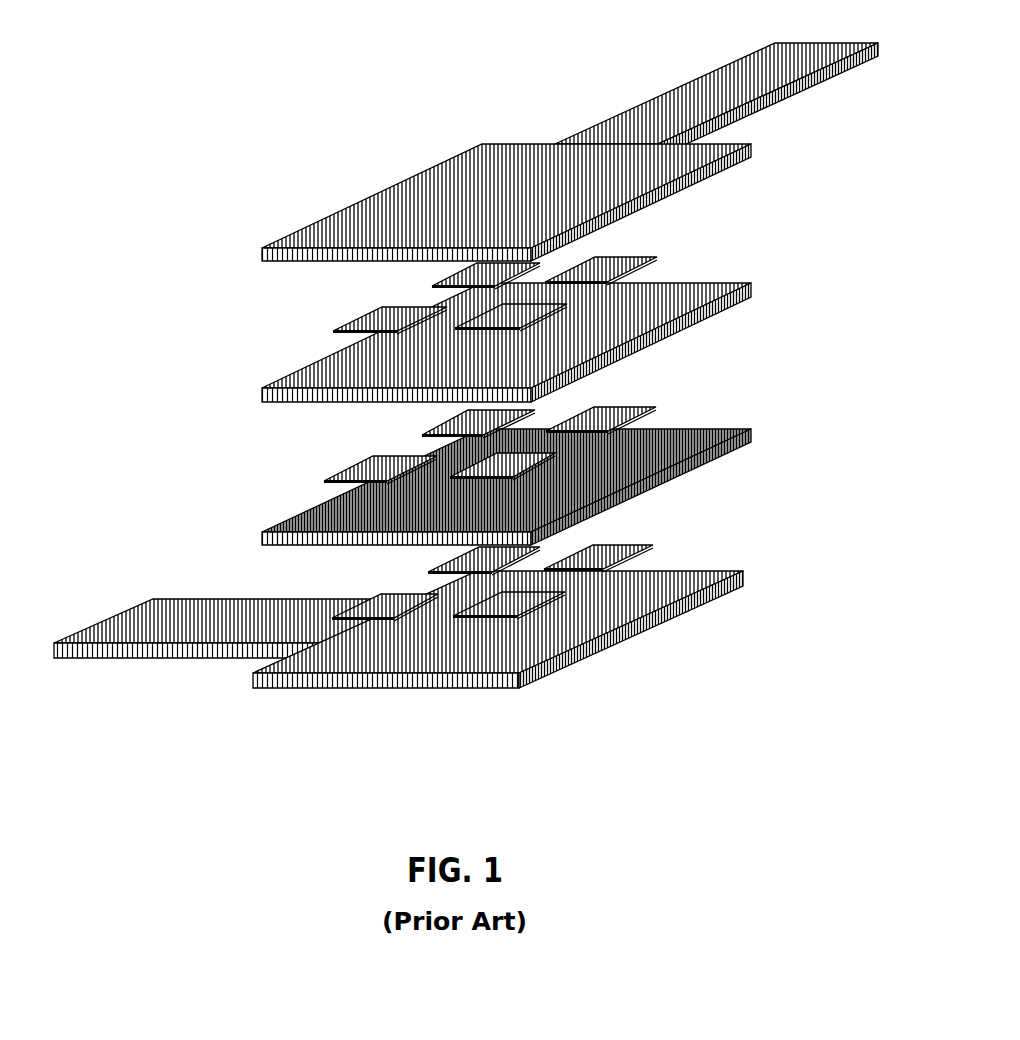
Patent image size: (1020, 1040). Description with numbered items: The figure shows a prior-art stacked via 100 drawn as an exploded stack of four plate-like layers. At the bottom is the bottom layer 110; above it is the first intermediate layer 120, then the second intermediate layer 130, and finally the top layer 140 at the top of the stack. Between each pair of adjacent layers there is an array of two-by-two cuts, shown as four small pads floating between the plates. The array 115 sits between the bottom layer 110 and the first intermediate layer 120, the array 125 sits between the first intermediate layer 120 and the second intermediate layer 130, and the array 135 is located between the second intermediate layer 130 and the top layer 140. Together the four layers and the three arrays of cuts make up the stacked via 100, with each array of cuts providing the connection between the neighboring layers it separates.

The stacked via 100 is at (466, 425).
The bottom layer 110 is at (429, 629).
The array of 2×2 cuts 115 is at (430, 583).
The first intermediate layer 120 is at (533, 487).
The array of 2×2 cuts 125 is at (429, 445).
The second intermediate layer 130 is at (533, 342).
The array of 2×2 cuts 135 is at (430, 295).
The top layer 140 is at (570, 152).